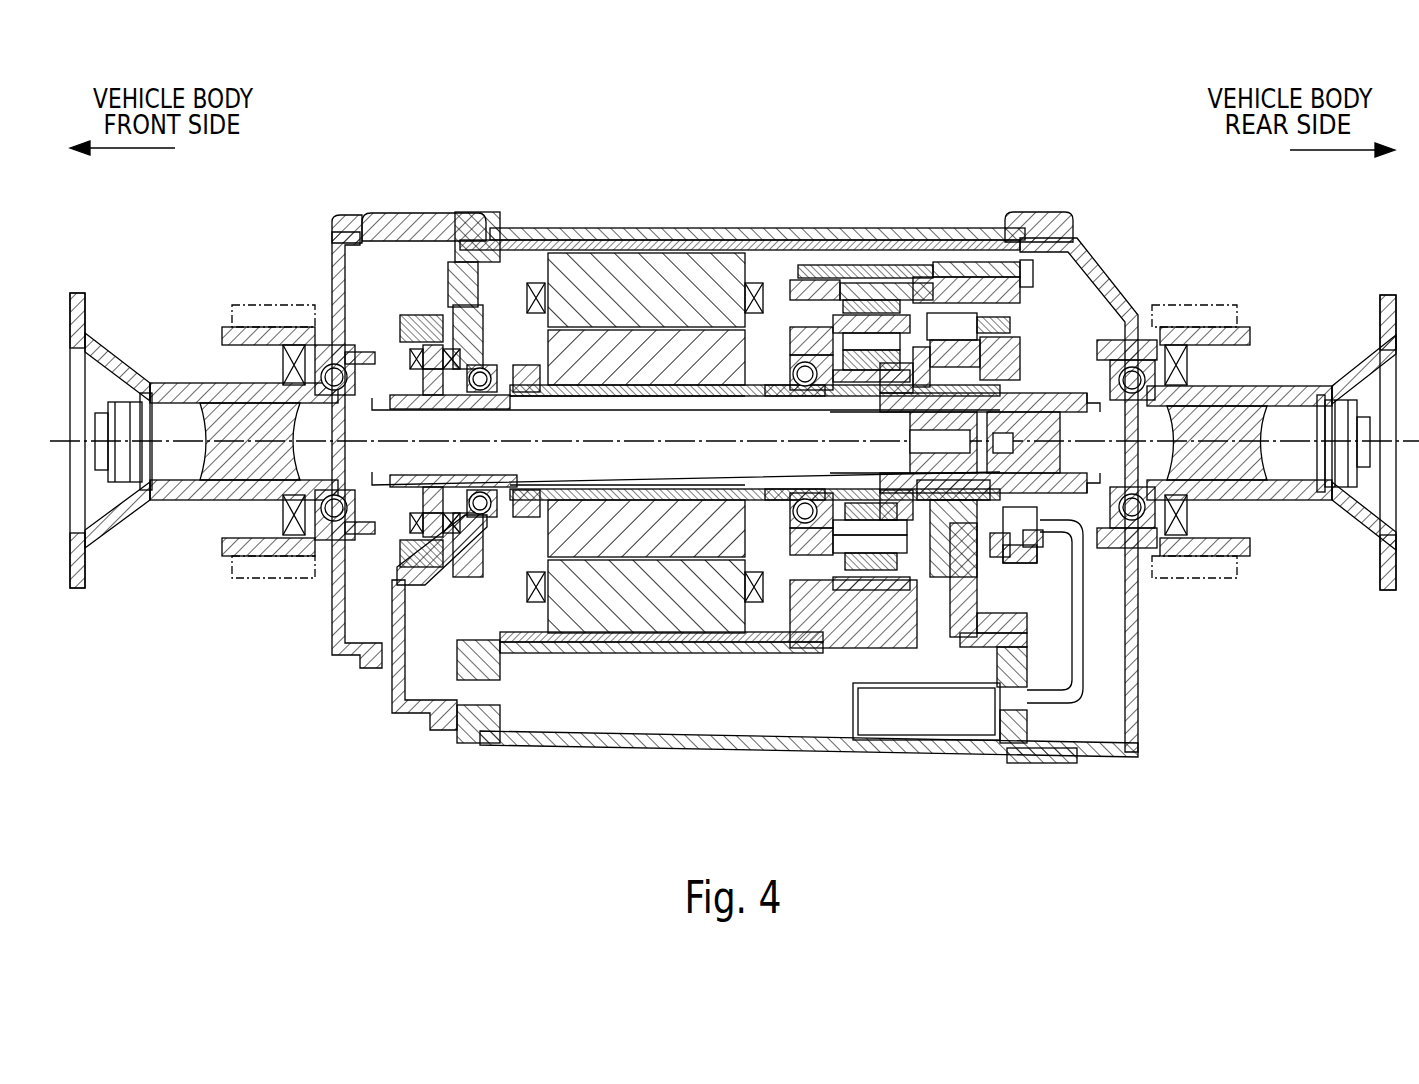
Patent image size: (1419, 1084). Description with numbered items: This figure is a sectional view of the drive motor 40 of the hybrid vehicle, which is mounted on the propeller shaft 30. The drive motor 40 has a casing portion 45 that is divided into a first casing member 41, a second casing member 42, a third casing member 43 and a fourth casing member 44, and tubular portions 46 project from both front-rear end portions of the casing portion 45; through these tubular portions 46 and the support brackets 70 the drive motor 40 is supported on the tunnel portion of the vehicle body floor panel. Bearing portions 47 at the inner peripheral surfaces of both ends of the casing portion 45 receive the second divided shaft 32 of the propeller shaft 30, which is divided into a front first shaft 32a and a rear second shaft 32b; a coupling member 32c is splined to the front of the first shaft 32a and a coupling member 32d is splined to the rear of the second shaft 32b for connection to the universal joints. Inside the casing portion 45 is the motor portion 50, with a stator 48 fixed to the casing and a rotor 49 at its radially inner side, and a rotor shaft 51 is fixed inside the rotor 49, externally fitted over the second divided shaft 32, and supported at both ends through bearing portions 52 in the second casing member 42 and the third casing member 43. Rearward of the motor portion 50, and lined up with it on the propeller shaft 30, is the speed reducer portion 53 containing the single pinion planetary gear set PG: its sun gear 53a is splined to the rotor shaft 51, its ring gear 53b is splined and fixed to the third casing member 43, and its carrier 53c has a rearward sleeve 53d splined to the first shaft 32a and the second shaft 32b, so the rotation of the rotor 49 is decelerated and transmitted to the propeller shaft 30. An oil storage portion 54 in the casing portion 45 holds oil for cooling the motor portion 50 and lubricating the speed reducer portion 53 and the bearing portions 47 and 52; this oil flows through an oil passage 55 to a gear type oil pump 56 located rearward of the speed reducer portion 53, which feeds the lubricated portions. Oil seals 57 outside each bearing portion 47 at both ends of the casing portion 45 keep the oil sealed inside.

The propeller shaft 30 is at (185, 500).
The second divided shaft 32 is at (1260, 500).
The first shaft 32a is at (232, 495).
The second shaft 32b is at (1205, 565).
The coupling member 32c is at (82, 345).
The coupling member 32d is at (1395, 318).
The drive motor 40 is at (1088, 212).
The first casing member 41 is at (338, 232).
The second casing member 42 is at (400, 213).
The third casing member 43 is at (478, 212).
The fourth casing member 44 is at (1050, 212).
The casing portion 45 is at (1093, 258).
The tubular portions 46 is at (278, 327).
The bearing portions 47 is at (340, 352).
The stator 48 is at (565, 255).
The rotor 49 is at (605, 328).
The motor portion 50 is at (670, 255).
The rotor shaft 51 is at (700, 370).
The bearing portions 52 is at (478, 364).
The speed reducer portion 53 is at (895, 300).
The sun gear 53a is at (855, 410).
The ring gear 53b is at (858, 265).
The carrier 53c is at (970, 372).
The sleeve 53d is at (1062, 412).
The oil storage portion 54 is at (780, 740).
The oil passage 55 is at (1085, 680).
The oil pump 56 is at (1005, 548).
The oil seals 57 is at (283, 362).
The support brackets 70 is at (276, 580).
The planetary gear set PG is at (1000, 308).